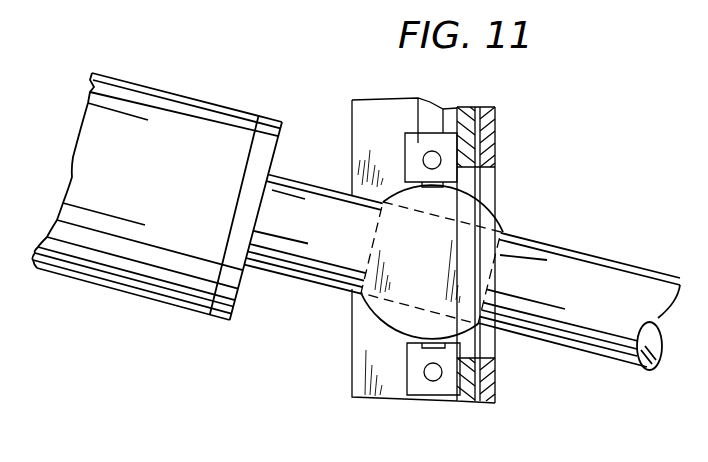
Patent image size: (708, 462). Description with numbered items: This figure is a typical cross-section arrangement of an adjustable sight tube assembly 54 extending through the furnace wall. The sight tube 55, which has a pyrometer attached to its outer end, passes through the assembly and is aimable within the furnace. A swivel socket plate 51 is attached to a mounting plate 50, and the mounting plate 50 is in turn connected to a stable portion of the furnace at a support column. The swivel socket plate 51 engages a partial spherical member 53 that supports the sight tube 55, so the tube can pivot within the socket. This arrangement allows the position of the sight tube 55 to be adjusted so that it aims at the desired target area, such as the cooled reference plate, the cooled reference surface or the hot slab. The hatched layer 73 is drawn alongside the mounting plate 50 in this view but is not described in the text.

The mounting plate 50 is at (462, 107).
The swivel socket plate 51 is at (417, 98).
The partial spherical member 53 is at (377, 317).
The adjustable sight tube assembly 54 is at (556, 191).
The sight tube 55 is at (577, 275).
The resilient gasket 73 is at (487, 137).